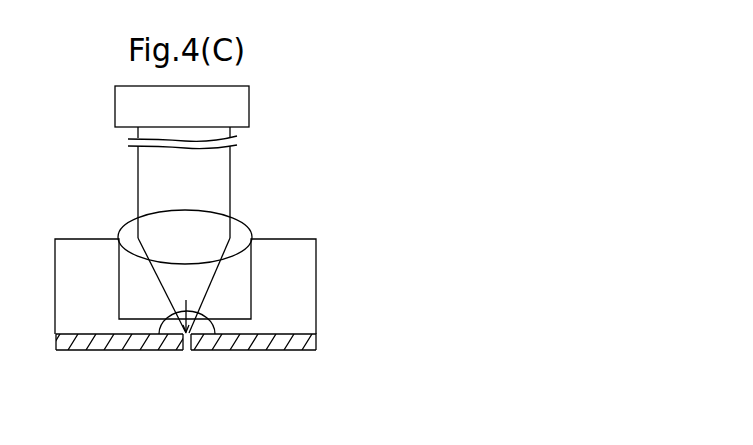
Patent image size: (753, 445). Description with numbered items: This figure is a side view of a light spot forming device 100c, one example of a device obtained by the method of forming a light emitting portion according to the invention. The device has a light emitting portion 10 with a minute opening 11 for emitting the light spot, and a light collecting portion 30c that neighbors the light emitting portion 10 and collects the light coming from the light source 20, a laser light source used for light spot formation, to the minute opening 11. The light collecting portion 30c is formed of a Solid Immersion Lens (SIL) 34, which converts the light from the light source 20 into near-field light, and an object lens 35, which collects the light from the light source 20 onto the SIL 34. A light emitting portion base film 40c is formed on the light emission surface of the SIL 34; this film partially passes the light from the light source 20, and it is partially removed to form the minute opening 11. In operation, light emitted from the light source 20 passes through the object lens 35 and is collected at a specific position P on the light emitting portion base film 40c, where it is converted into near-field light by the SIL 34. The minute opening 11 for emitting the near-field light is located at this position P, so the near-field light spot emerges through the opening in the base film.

The light spot forming device 100c is at (356, 133).
The light source 20 is at (249, 109).
The object lens 35 is at (243, 223).
The light collecting portion 30c is at (321, 267).
The Solid Immersion Lens (SIL) 34 is at (213, 329).
The light emitting portion base film 40c is at (300, 342).
The light emitting portion 10 is at (197, 358).
The minute opening 11 is at (186, 350).
The specific position P is at (187, 304).